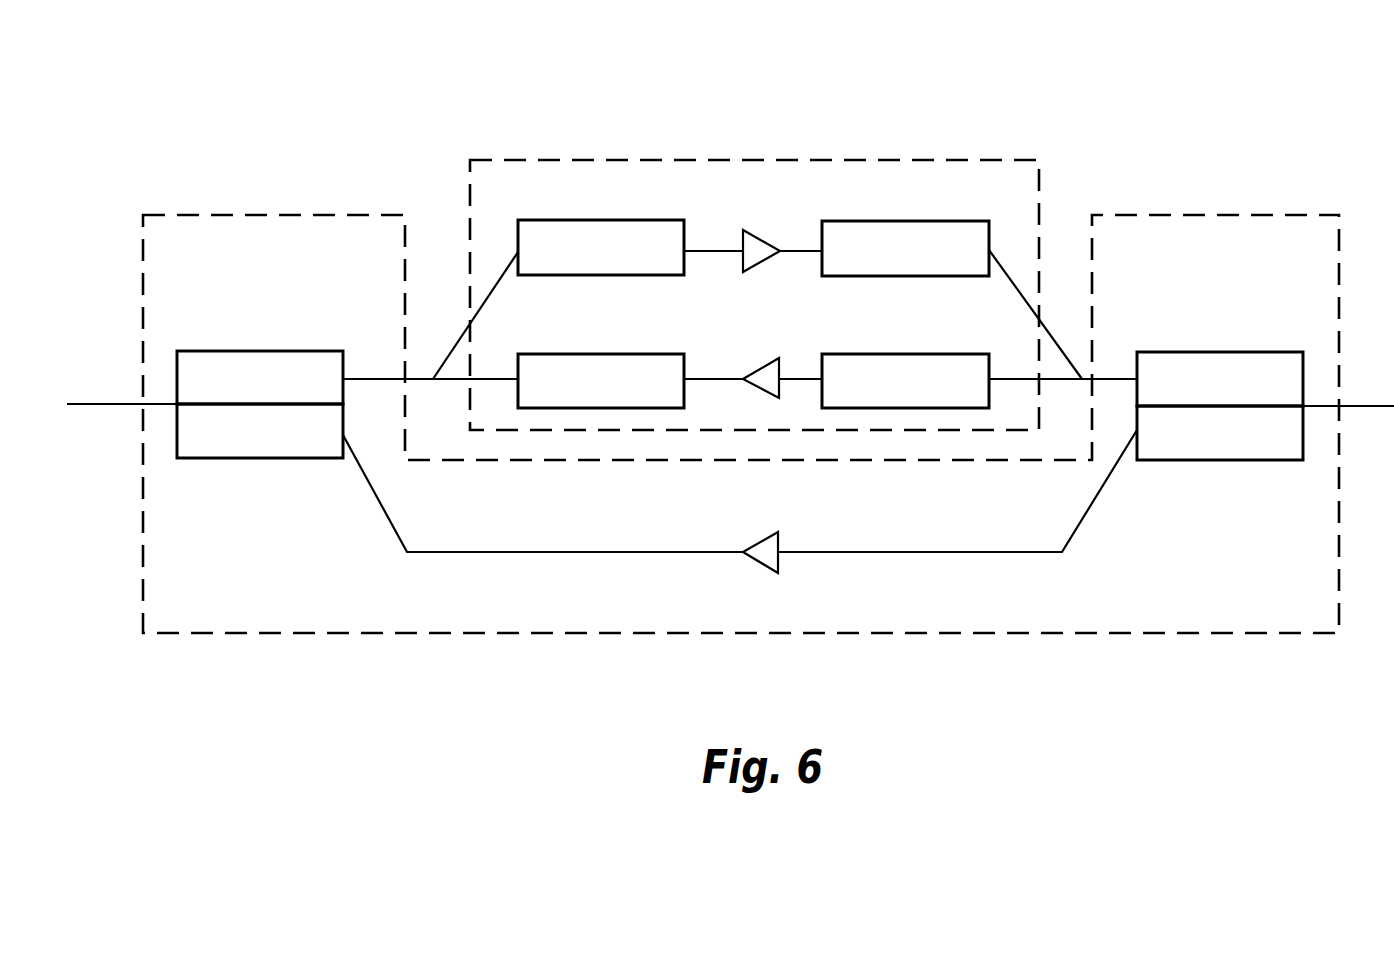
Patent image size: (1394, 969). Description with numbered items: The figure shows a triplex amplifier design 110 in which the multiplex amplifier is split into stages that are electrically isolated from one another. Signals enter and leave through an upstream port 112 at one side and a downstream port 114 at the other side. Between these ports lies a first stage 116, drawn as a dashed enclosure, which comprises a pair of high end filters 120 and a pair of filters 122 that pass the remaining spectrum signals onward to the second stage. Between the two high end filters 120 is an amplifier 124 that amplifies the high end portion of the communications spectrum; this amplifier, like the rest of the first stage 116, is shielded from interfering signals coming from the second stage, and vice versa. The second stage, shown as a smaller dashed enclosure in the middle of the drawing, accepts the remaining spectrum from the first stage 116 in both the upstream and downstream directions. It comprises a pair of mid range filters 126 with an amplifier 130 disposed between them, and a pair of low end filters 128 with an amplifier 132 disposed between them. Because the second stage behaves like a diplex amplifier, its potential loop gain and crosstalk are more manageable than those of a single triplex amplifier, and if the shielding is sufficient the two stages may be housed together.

The triplex amplifier design 110 is at (1055, 80).
The upstream port 112 is at (107, 403).
The downstream port 114 is at (1363, 405).
The first stage 116 is at (177, 212).
The high end filter 120 is at (216, 460).
The filter 122 is at (265, 350).
The amplifier 124 is at (765, 535).
The mid range filter 126 is at (545, 220).
The low end filter 128 is at (560, 354).
The amplifier 130 is at (748, 230).
The amplifier 132 is at (762, 362).